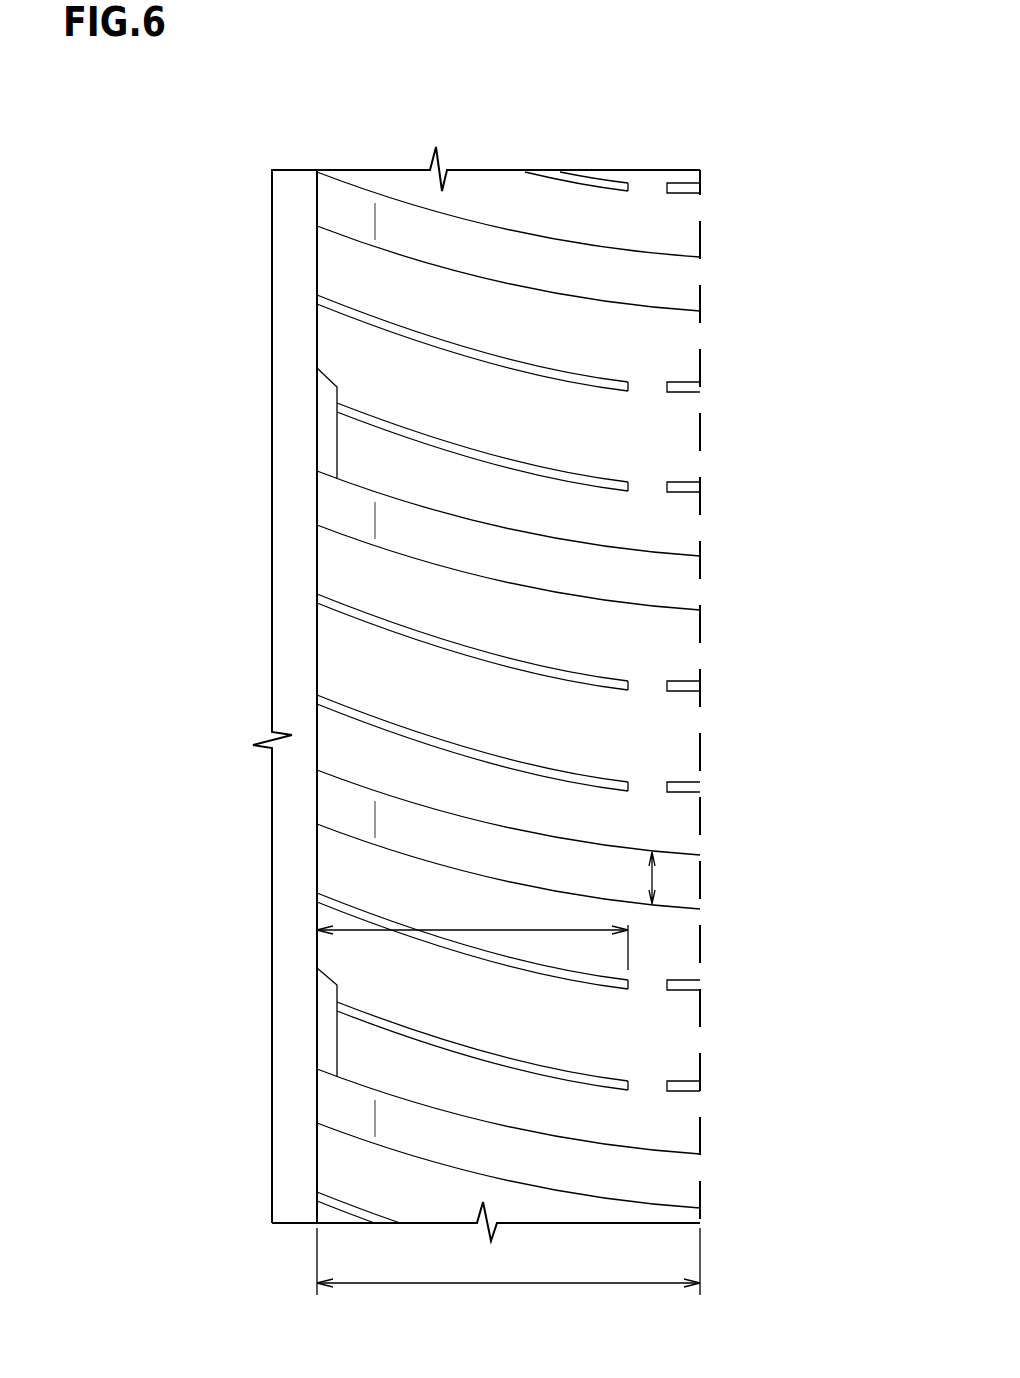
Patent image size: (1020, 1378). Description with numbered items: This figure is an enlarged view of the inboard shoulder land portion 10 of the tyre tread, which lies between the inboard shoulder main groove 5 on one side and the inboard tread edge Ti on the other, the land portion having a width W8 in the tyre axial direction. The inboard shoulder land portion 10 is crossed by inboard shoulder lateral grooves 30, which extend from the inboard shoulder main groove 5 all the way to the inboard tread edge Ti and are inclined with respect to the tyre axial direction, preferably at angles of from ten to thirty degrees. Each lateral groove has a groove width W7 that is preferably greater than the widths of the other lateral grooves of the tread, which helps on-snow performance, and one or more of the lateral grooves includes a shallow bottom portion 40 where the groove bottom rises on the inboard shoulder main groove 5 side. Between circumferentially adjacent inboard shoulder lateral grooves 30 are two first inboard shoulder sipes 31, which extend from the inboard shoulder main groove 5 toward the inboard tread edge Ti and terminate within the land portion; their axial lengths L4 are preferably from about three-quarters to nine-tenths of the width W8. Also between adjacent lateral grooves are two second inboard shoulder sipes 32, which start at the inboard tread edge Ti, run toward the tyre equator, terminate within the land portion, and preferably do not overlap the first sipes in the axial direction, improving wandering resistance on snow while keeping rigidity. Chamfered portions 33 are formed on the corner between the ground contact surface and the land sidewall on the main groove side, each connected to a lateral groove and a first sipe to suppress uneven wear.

The inboard shoulder main groove 5 is at (294, 209).
The shallow bottom portion 40 is at (343, 208).
The inboard shoulder land portion 10 is at (487, 209).
The inboard shoulder lateral grooves 30 is at (567, 270).
The first inboard shoulder sipes 31 is at (418, 337).
The second inboard shoulder sipes 32 is at (682, 686).
The chamfered portions 33 is at (327, 437).
The inboard tread edge Ti is at (700, 236).
The lengths in the tyre axial direction of the first inboard shoulder sipes L4 is at (497, 930).
The groove widths of the inboard shoulder lateral grooves W7 is at (653, 880).
The width in the tyre axial direction of the inboard shoulder land portion W8 is at (508, 1274).